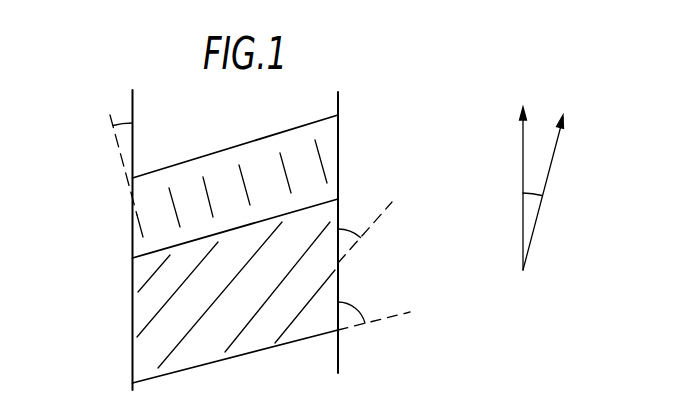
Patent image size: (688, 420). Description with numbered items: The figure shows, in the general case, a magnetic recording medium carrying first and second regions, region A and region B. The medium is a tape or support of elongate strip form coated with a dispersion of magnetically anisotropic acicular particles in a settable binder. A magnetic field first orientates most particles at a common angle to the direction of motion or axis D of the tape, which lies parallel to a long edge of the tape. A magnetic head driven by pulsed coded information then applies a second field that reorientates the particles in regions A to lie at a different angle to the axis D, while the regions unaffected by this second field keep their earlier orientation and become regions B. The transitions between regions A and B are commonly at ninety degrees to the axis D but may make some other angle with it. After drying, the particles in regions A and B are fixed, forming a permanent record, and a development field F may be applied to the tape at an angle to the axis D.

The first region A is at (150, 217).
The second region B is at (147, 305).
The axis of the tape D is at (524, 177).
The development field F is at (549, 181).